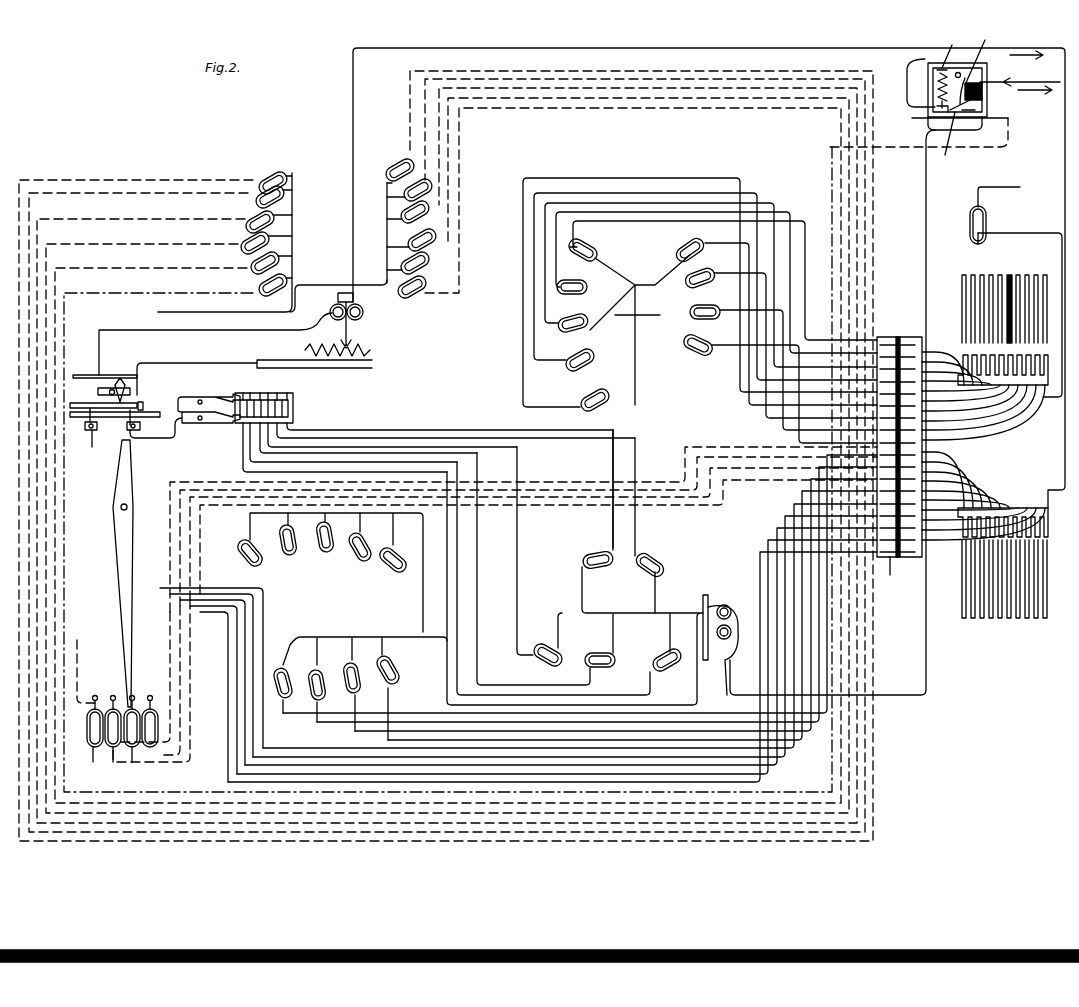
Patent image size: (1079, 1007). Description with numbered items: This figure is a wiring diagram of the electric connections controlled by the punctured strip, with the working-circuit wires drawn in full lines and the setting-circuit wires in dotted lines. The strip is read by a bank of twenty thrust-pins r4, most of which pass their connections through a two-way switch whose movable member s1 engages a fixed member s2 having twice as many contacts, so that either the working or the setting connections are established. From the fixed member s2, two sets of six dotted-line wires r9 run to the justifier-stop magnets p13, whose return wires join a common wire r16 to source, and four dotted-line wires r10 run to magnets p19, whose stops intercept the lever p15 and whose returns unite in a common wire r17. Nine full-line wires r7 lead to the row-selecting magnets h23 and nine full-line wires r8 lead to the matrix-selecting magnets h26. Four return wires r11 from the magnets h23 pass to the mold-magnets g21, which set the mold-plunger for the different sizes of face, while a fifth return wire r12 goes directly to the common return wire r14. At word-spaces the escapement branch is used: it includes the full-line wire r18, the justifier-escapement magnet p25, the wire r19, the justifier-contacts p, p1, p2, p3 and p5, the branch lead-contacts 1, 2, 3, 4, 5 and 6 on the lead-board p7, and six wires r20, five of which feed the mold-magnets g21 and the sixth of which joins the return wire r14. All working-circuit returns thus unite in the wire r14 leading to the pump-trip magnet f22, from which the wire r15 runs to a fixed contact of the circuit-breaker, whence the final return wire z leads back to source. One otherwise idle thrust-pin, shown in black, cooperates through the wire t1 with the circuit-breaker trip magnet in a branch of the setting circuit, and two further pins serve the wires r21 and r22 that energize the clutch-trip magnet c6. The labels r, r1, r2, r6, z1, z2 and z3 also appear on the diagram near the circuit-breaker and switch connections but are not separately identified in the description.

The full-line wire r18 is at (660, 54).
The final return-wire z is at (925, 60).
The relay contact z3 is at (1020, 70).
The relay armature z2 is at (985, 95).
The relay conductor z1 is at (1010, 108).
The conductor r is at (910, 118).
The conductor r1 is at (947, 141).
The conductor r2 is at (968, 54).
The return-wire r15 is at (928, 205).
The trip-clutch wire r22 is at (1020, 185).
The trip-magnet c6 is at (970, 233).
The trip-clutch wire r21 is at (1062, 252).
The thrust-pins r4 is at (998, 305).
The conductors to comb r6 is at (980, 505).
The movable member of two-way switch s1 is at (900, 335).
The fixed member of two-way switch s2 is at (891, 575).
The dotted-line wires r9 is at (450, 152).
The magnets p13 is at (280, 260).
The common wire r16 is at (170, 310).
The justifier-escapement magnet p25 is at (365, 315).
The wire r19 is at (258, 330).
The justifier-contact p is at (78, 373).
The justifier-contact p1 is at (122, 378).
The justifier-contact p2 is at (145, 402).
The justifier-contact p3 is at (142, 428).
The justifier-contact p5 is at (228, 395).
The branch lead-board p7 is at (295, 410).
The branch lead-contact 6 is at (242, 383).
The branch lead-contact 5 is at (251, 383).
The branch lead-contact 4 is at (260, 383).
The branch lead-contact 3 is at (269, 383).
The branch lead-contact 2 is at (278, 383).
The branch lead-contact 1 is at (287, 383).
The six wires r20 is at (370, 435).
The fifth return-wire r12 is at (478, 418).
The mold-magnets g21 is at (598, 655).
The return-wires r11 is at (630, 400).
The magnets h23 is at (585, 290).
The full-line wires r7 is at (770, 400).
The wire t1 is at (830, 215).
The dotted-line wires r10 is at (212, 618).
The magnets h26 is at (330, 548).
The full-line wires r8 is at (770, 565).
The common return-wire r14 is at (703, 598).
The pump-trip magnet f22 is at (735, 640).
The lever p15 is at (122, 590).
The common wire r17 is at (78, 663).
The magnets p19 is at (140, 722).